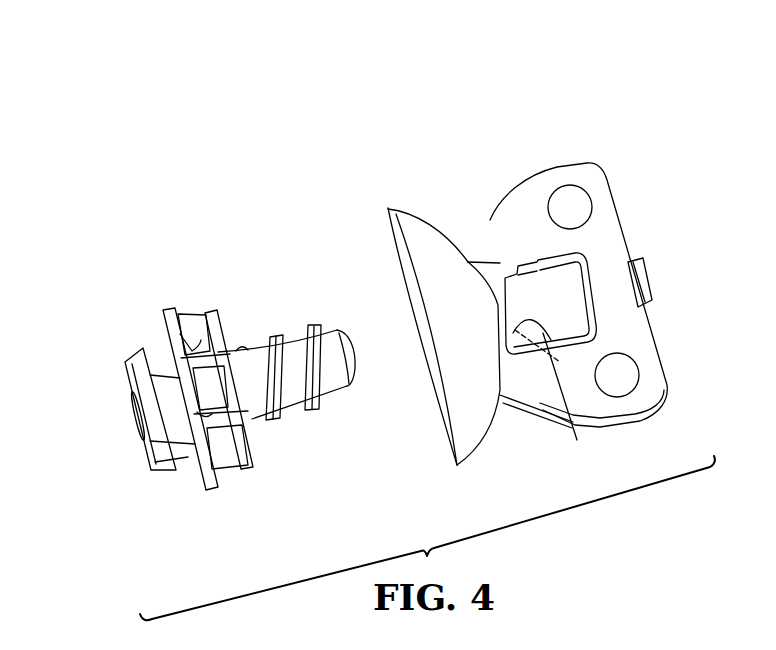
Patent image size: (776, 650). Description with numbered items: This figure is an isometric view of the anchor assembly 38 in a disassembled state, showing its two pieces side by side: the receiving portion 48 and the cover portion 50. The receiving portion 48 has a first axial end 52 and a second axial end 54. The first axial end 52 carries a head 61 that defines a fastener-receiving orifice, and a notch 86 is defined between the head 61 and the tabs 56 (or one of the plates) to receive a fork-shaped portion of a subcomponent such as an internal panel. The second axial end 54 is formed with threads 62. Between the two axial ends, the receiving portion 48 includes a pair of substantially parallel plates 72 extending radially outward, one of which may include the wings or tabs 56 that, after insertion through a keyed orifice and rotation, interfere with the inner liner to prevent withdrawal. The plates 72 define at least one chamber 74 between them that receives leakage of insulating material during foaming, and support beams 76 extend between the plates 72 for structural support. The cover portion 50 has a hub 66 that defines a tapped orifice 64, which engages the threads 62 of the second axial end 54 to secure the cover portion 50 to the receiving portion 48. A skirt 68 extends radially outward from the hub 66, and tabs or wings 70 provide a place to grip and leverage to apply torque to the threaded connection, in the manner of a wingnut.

The anchor assembly 38 is at (510, 97).
The receiving portion 48 is at (182, 289).
The cover portion 50 is at (632, 217).
The first axial end 52 is at (160, 475).
The second axial end 54 is at (334, 377).
The tabs 56 is at (165, 308).
The head 61 is at (147, 383).
The threads 62 is at (273, 421).
The tapped orifice 64 is at (570, 430).
The hub 66 is at (496, 320).
The skirt 68 is at (468, 392).
The wings 70 is at (593, 177).
The substantially parallel plates 72 is at (223, 327).
The chamber 74 is at (190, 326).
The support beams 76 is at (178, 334).
The notch 86 is at (183, 450).